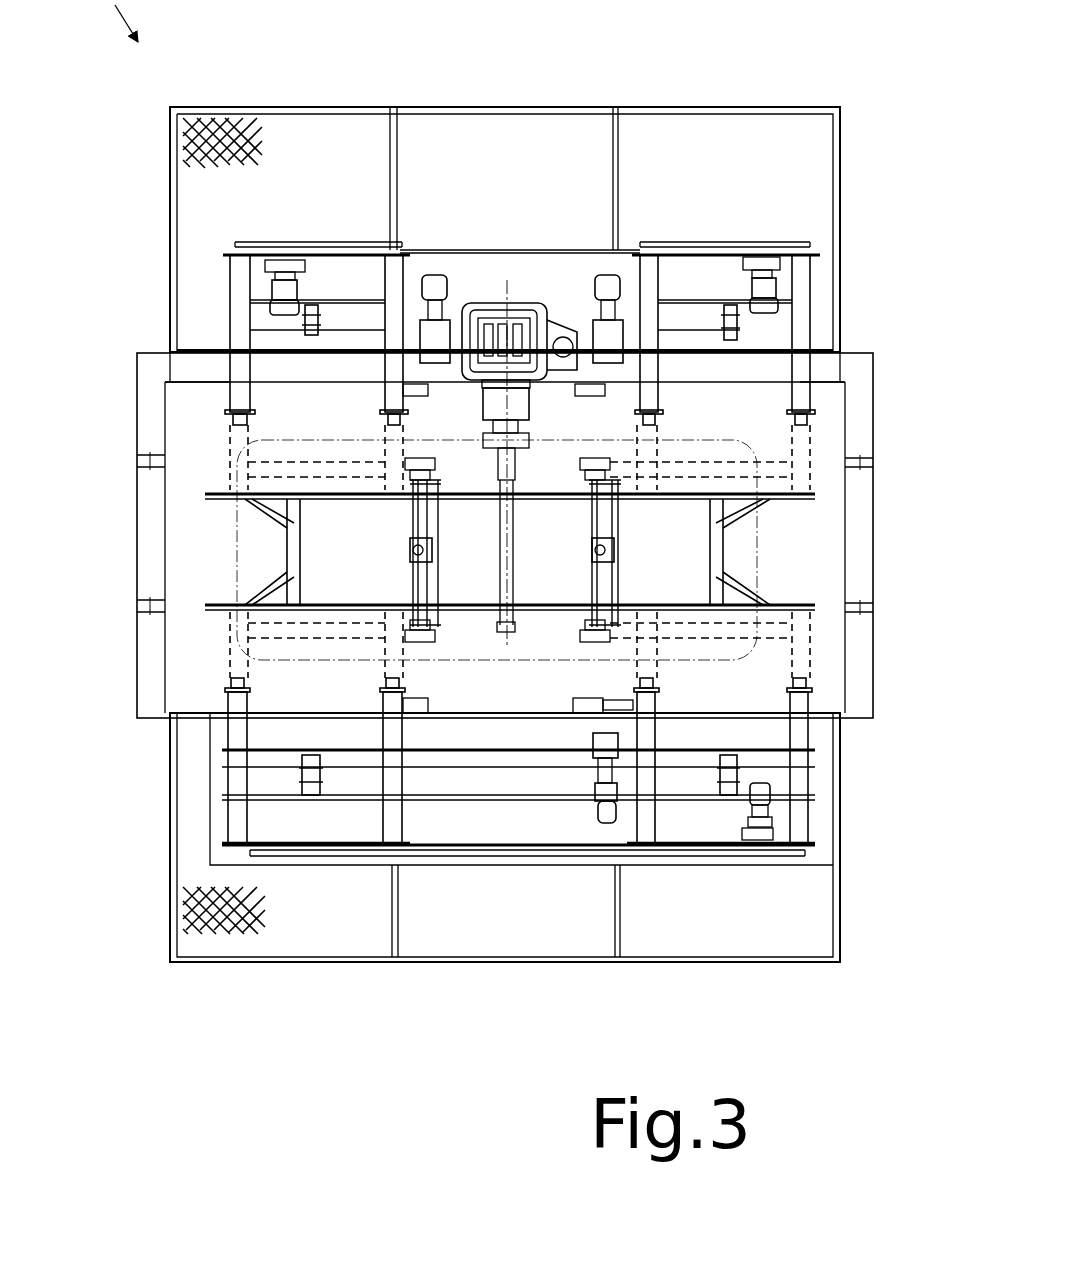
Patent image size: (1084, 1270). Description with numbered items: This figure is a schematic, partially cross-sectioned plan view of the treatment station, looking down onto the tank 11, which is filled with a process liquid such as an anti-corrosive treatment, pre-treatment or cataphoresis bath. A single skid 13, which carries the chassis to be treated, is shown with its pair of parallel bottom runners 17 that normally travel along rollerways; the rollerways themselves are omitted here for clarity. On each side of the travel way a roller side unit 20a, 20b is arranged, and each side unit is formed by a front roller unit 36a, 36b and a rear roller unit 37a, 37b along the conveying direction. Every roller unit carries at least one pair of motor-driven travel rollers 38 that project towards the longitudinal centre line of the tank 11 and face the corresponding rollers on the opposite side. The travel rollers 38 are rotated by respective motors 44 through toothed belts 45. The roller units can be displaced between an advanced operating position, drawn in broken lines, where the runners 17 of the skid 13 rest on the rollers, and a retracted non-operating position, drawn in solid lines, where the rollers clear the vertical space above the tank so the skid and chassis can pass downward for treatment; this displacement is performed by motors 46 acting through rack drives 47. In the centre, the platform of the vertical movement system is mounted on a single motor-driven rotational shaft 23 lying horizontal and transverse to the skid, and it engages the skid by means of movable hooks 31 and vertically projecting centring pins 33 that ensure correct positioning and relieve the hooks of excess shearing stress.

The tank 11 is at (172, 549).
The skid 13 is at (750, 548).
The bottom runners 17 is at (236, 494).
The side unit 20a is at (897, 295).
The side unit 20b is at (897, 832).
The rotational shaft 23 is at (508, 637).
The hooks 31 is at (418, 466).
The centring pins 33 is at (410, 550).
The front roller unit 36a is at (298, 235).
The front roller unit 36b is at (302, 874).
The rear roller unit 37a is at (680, 233).
The rear roller unit 37b is at (757, 876).
The travel rollers 38 is at (236, 422).
The motors 44 is at (270, 309).
The toothed belts 45 is at (527, 242).
The motors 46 is at (432, 275).
The rack drives 47 is at (313, 325).